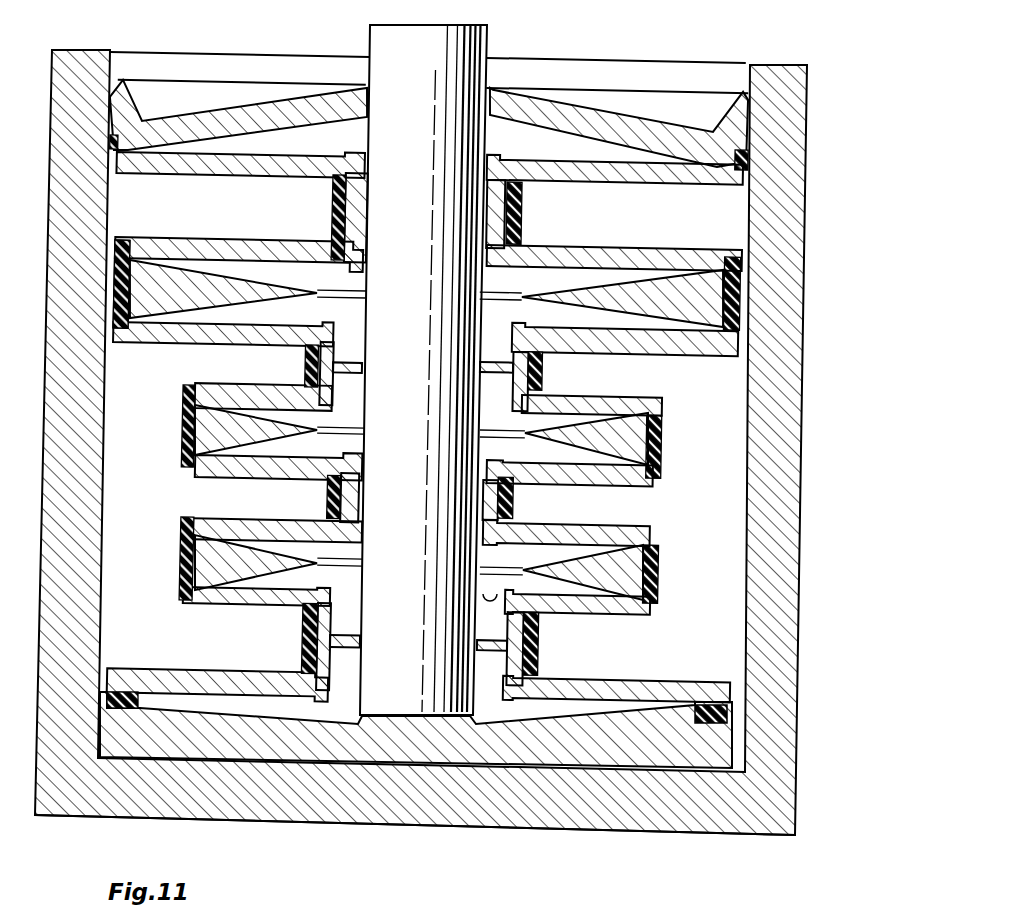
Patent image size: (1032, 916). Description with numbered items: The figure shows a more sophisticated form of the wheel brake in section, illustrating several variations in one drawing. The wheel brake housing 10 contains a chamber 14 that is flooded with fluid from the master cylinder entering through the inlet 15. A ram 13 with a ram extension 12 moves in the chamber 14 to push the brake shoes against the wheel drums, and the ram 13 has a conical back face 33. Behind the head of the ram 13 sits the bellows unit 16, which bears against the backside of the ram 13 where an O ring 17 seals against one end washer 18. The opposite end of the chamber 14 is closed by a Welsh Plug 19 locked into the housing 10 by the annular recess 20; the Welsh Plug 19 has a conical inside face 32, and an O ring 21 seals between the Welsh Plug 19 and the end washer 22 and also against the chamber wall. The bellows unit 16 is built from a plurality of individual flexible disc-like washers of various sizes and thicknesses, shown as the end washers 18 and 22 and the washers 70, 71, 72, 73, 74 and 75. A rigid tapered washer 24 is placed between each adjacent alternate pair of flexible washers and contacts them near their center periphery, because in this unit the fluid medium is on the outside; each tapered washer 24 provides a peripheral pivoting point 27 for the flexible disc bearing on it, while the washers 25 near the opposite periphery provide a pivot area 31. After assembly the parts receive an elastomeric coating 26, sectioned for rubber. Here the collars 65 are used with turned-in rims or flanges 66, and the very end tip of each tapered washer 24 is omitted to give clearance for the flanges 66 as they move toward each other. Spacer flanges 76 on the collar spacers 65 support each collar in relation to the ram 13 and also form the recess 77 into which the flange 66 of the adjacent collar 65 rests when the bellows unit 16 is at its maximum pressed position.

The wheel brake housing 10 is at (60, 420).
The ram extension 12 is at (466, 44).
The ram 13 is at (462, 210).
The chamber 14 is at (157, 760).
The inlet 15 is at (443, 818).
The bellows unit 16 is at (220, 104).
The O ring 17 is at (723, 702).
The end washer 18 is at (627, 682).
The Welsh Plug 19 is at (634, 124).
The annular recess 20 is at (108, 97).
The O ring 21 is at (750, 160).
The end washer 22 is at (670, 177).
The tapered washer 24 is at (588, 298).
The washer 25 is at (348, 213).
The elastomeric coating 26 is at (332, 187).
The peripheral pivoting point 27 is at (127, 256).
The pivot area 31 is at (318, 362).
The inside face 32 is at (258, 143).
The back face 33 is at (556, 720).
The collar 65 is at (540, 645).
The flange 66 is at (358, 149).
The flexible disc-like washer 70 is at (580, 255).
The flexible disc-like washer 71 is at (594, 343).
The flexible disc-like washer 72 is at (600, 398).
The flexible disc-like washer 73 is at (583, 472).
The flexible disc-like washer 74 is at (575, 530).
The flexible disc-like washer 75 is at (600, 613).
The spacer flange 76 is at (506, 352).
The recess 77 is at (502, 584).